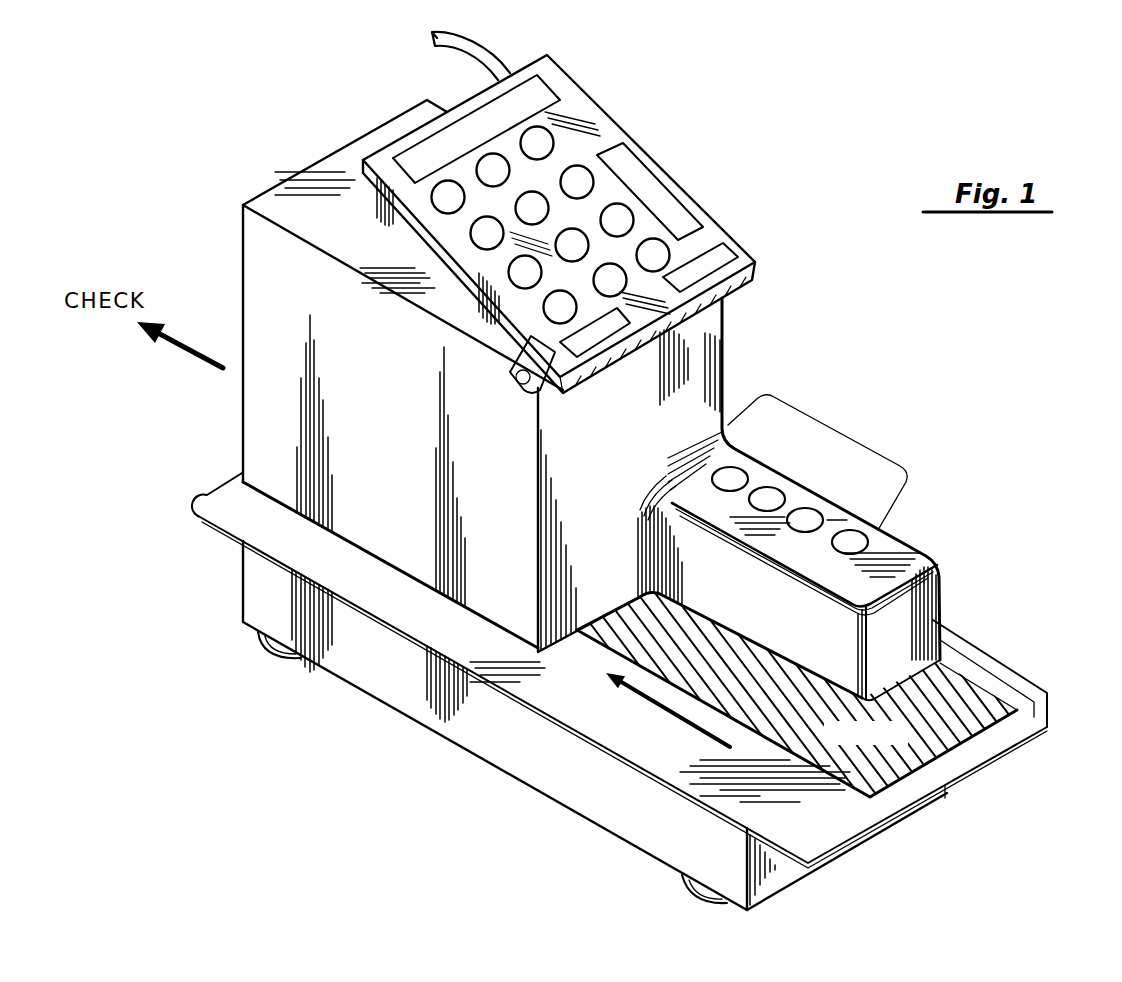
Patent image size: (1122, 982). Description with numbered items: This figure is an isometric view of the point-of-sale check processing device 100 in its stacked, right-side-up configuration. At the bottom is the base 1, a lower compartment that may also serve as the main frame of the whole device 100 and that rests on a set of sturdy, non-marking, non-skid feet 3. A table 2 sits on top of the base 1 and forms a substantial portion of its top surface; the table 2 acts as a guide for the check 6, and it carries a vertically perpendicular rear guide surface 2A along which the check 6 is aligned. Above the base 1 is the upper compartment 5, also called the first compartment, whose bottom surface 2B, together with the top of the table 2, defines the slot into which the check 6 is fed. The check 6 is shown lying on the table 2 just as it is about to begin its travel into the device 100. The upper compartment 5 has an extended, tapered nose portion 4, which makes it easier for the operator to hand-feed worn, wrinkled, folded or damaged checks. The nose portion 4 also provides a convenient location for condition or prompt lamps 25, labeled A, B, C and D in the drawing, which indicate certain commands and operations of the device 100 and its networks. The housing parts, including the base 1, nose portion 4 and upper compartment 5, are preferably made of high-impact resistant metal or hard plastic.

The point-of-sale device 100 is at (395, 752).
The base 1 is at (523, 737).
The table 2 is at (433, 617).
The rear guide surface 2A is at (1011, 690).
The bottom surface of the upper compartment 2B is at (395, 567).
The feet 3 is at (272, 642).
The tapered portion of the upper compartment 4 is at (887, 560).
The upper compartment 5 is at (382, 404).
The check 6 is at (722, 678).
The condition lamps 25 is at (840, 424).
The sensor A is at (730, 468).
The sensor B is at (767, 488).
The sensor C is at (805, 509).
The sensor D is at (850, 531).